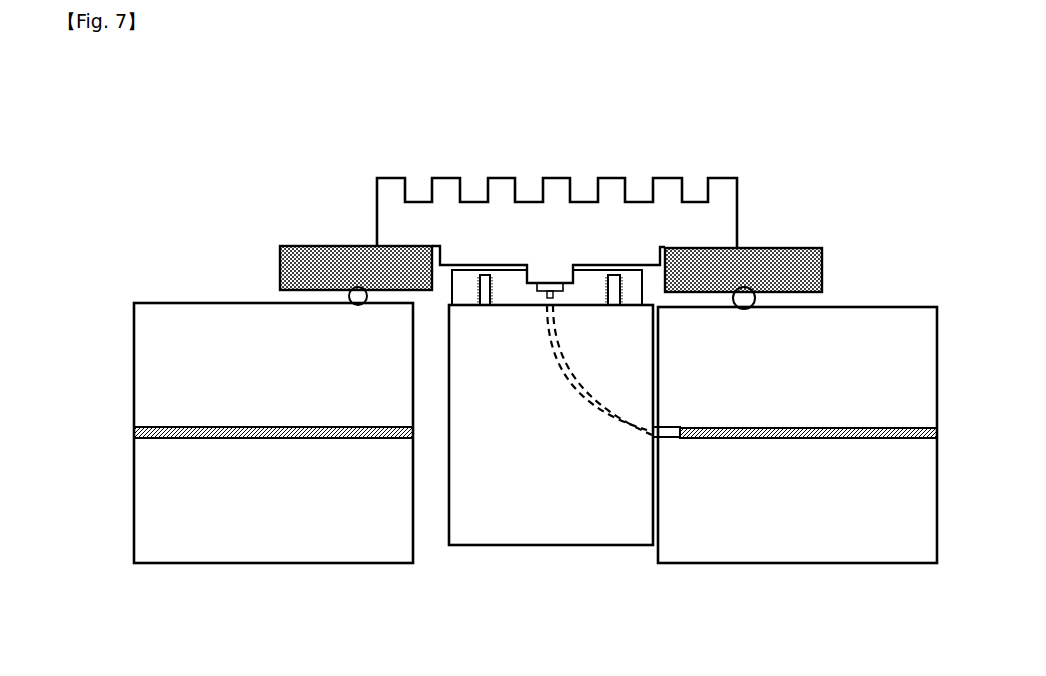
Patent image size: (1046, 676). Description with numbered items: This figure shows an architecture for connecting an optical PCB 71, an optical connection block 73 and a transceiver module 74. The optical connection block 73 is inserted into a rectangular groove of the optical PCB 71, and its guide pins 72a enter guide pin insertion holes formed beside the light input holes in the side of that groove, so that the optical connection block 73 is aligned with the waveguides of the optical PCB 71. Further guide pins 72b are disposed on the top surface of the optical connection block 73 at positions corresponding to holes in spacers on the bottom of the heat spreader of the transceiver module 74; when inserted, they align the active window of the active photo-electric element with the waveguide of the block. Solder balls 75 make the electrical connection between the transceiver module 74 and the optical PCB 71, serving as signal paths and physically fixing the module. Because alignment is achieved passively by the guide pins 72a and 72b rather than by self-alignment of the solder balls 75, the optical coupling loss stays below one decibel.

The optical PCB 71 is at (220, 338).
The guide pins 72a is at (660, 432).
The guide pins 72b is at (482, 291).
The optical connection block 73 is at (503, 507).
The transceiver module 74 is at (522, 168).
The solder balls 75 is at (349, 296).